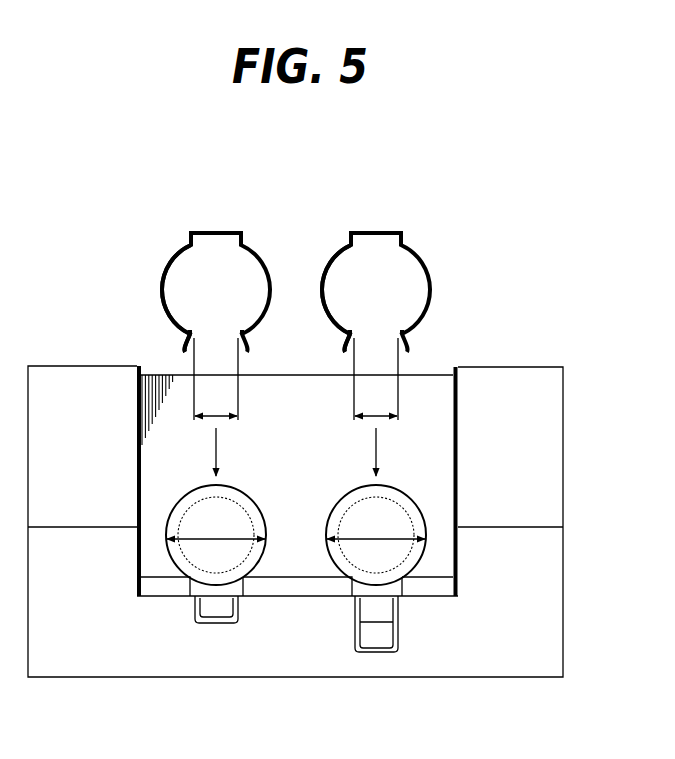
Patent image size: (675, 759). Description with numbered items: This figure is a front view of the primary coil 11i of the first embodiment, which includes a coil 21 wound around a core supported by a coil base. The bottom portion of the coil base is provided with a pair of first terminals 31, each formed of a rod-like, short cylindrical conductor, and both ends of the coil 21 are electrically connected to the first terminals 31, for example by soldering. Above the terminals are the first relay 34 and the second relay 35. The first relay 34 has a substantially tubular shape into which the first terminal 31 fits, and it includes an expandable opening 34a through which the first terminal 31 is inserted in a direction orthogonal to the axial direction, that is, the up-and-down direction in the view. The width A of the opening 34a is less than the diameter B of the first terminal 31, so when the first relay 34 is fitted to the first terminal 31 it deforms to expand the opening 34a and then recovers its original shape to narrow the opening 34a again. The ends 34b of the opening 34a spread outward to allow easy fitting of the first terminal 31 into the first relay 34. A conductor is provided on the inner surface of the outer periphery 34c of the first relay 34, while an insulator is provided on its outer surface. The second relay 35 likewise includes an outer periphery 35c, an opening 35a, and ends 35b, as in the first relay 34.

The primary coil 11i is at (474, 358).
The coil 21 is at (443, 480).
The first terminal 31 is at (193, 552).
The first relay 34 is at (213, 229).
The opening 34a is at (195, 338).
The ends 34b is at (183, 350).
The outer periphery 34c is at (166, 276).
The second relay 35 is at (373, 229).
The opening 35a is at (355, 338).
The ends 35b is at (343, 350).
The outer periphery 35c is at (326, 276).